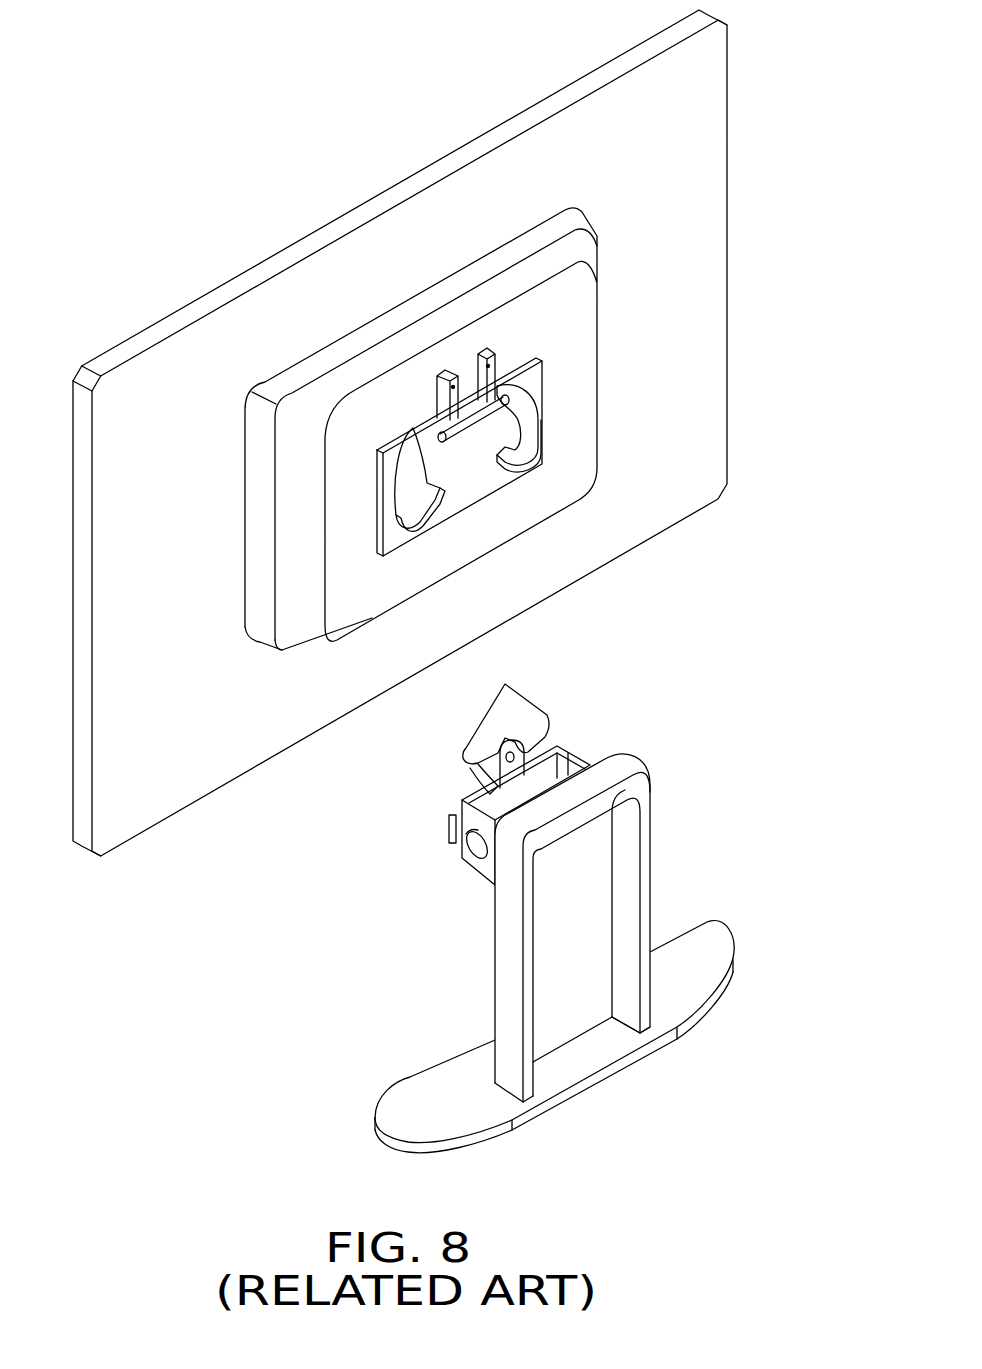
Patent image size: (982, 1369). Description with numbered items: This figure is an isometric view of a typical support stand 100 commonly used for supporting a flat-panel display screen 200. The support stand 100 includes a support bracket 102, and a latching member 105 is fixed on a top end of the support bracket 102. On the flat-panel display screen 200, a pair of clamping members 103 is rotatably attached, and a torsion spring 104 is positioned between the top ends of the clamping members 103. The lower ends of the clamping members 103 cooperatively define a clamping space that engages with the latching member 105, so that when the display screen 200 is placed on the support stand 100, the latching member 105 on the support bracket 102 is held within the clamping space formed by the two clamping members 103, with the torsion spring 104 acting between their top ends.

The flat-panel display screen 200 is at (680, 206).
The support stand 100 is at (573, 912).
The support bracket 102 is at (645, 910).
The clamping members 103 is at (523, 445).
The torsion spring 104 is at (468, 382).
The latching member 105 is at (520, 712).